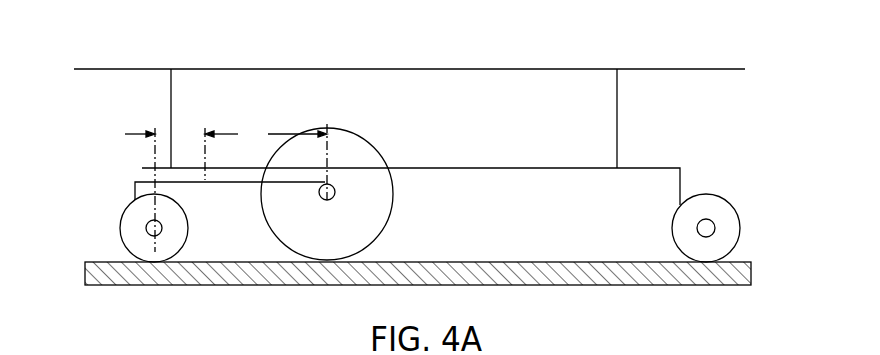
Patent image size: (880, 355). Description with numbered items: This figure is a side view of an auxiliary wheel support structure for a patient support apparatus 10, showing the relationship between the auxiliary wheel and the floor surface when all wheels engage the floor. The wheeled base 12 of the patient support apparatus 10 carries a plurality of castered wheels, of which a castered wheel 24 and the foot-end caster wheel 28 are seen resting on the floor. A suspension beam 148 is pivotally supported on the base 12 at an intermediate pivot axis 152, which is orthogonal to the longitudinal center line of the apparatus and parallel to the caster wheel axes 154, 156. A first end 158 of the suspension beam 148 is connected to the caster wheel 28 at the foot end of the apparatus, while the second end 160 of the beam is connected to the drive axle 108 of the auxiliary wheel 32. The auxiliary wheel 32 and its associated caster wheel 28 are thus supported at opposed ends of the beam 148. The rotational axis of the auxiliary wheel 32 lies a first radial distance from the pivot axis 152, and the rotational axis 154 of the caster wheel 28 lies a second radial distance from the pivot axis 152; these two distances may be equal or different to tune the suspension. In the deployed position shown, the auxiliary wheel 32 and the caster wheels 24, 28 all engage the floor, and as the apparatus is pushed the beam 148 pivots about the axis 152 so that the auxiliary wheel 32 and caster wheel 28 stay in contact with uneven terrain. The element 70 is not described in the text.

The patient support apparatus 10 is at (593, 33).
The base 12 is at (515, 170).
The castered wheel 24 is at (720, 205).
The caster wheel 28 is at (148, 252).
The auxiliary wheel 32 is at (367, 212).
The wheel assembly 70 is at (237, 119).
The drive axle 108 is at (333, 187).
The suspension beam 148 is at (288, 183).
The pivot axis 152 is at (207, 172).
The rotational axis 154 is at (706, 237).
The caster wheel axis 156 is at (150, 224).
The first end 158 is at (138, 180).
The second end 160 is at (336, 174).